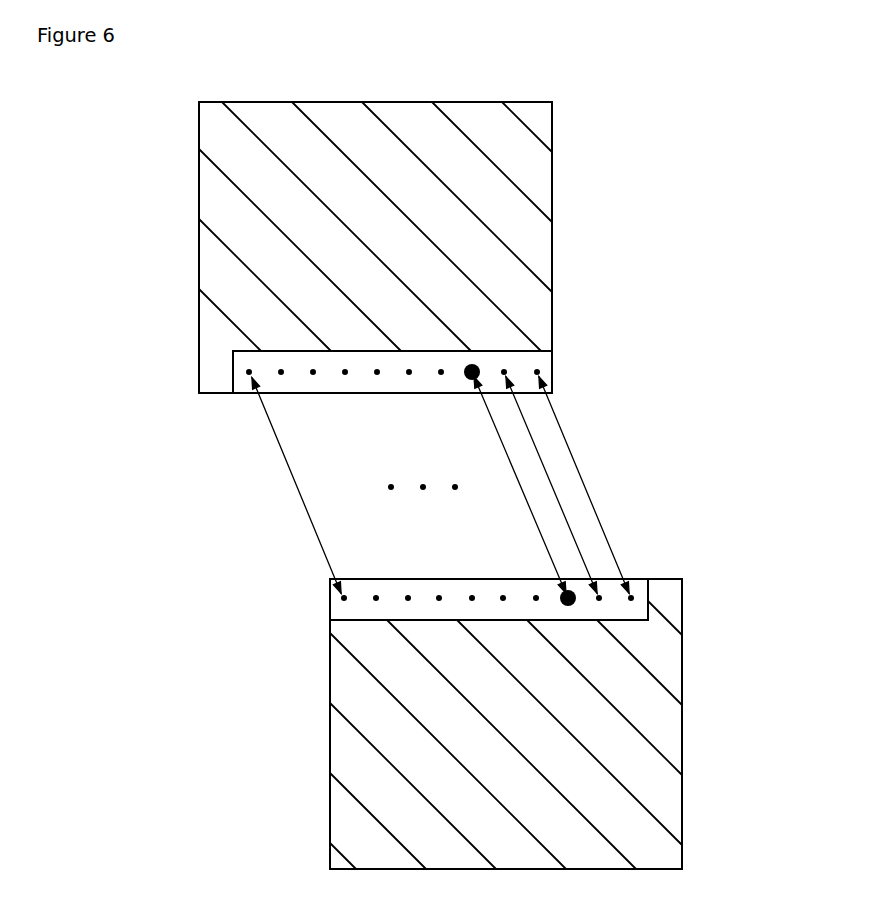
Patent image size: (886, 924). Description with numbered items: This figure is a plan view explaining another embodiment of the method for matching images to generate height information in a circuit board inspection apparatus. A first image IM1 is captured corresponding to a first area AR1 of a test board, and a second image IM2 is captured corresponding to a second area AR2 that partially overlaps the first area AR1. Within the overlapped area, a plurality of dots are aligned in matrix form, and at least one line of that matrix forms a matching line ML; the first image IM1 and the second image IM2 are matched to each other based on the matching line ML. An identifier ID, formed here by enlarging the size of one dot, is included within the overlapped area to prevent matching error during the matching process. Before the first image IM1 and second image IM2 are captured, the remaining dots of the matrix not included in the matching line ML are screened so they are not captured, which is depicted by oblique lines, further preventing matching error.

The first area AR1 is at (187, 178).
The first image IM1 is at (552, 273).
The identifier ID is at (478, 362).
The matching line ML is at (548, 372).
The second area AR2 is at (318, 787).
The second image IM2 is at (682, 722).